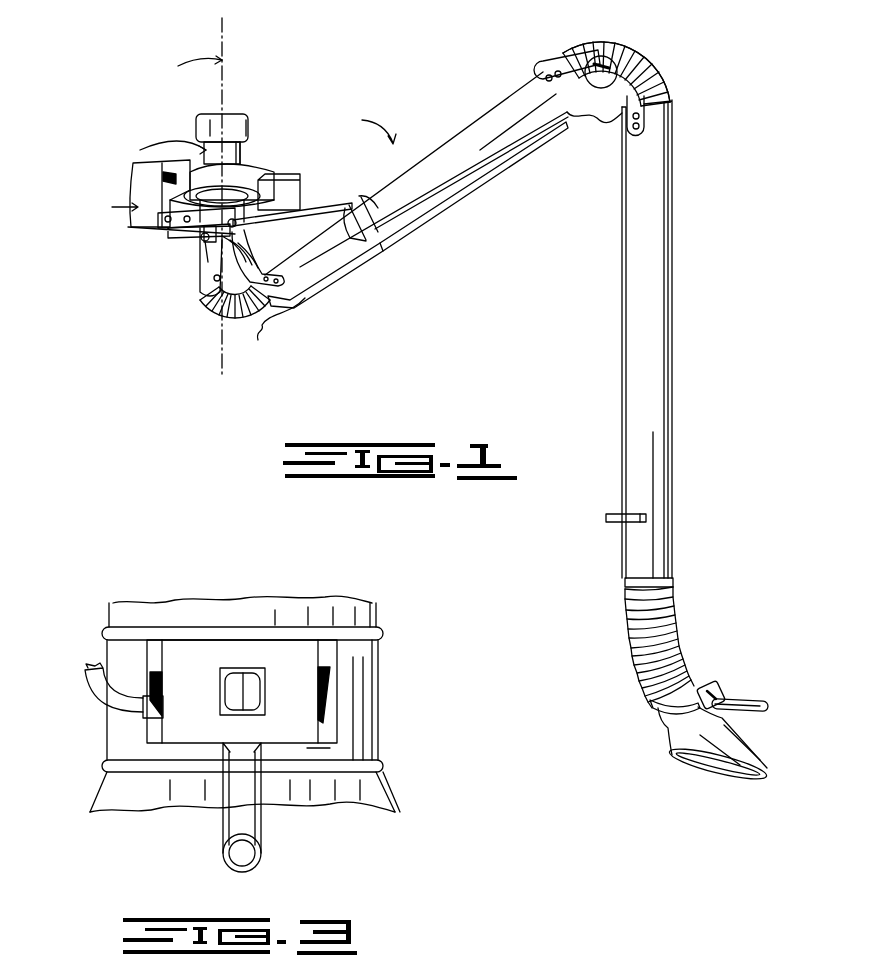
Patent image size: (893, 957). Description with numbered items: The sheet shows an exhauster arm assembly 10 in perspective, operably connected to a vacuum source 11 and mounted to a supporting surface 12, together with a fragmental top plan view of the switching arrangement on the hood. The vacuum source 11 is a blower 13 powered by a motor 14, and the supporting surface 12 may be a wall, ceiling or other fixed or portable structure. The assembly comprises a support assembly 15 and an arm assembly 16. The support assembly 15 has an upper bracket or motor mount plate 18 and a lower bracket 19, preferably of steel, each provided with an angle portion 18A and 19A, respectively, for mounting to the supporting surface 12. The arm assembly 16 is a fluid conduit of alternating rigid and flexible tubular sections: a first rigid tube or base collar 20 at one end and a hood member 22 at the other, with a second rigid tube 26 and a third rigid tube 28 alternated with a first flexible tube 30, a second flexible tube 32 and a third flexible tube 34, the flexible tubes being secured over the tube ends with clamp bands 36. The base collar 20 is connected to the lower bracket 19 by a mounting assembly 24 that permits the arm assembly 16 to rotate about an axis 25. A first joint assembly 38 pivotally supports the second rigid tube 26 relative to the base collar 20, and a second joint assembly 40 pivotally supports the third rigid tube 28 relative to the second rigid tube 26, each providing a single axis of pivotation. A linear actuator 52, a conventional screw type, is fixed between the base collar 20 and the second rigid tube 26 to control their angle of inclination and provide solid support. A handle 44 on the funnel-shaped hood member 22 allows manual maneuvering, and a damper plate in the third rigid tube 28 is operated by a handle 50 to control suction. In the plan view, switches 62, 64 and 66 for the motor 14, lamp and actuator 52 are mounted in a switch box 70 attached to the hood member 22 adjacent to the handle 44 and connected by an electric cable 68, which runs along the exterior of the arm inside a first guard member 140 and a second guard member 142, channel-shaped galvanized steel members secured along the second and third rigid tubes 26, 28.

In FIG. 1, the exhauster arm assembly 10 is at (362, 123).
In FIG. 1, the vacuum source 11 is at (195, 147).
In FIG. 1, the supporting surface 12 is at (295, 176).
In FIG. 1, the blower 13 is at (280, 175).
In FIG. 1, the motor 14 is at (240, 114).
In FIG. 1, the support assembly 15 is at (112, 207).
In FIG. 1, the arm assembly 16 is at (684, 230).
In FIG. 1, the upper bracket 18 is at (150, 162).
In FIG. 1, the angle portion 18A is at (160, 177).
In FIG. 1, the lower bracket 19 is at (168, 232).
In FIG. 1, the angle portion 19A is at (204, 236).
In FIG. 1, the base collar 20 is at (203, 240).
In FIG. 1, the hood member 22 is at (668, 748).
In FIG. 3, the hood member 22 is at (376, 604).
In FIG. 1, the mounting assembly 24 is at (160, 214).
In FIG. 1, the axis 25 is at (178, 67).
In FIG. 1, the second rigid tube 26 is at (460, 112).
In FIG. 1, the third rigid tube 28 is at (672, 378).
In FIG. 1, the first flexible tube 30 is at (238, 322).
In FIG. 1, the second flexible tube 32 is at (596, 45).
In FIG. 1, the third flexible tube 34 is at (680, 606).
In FIG. 1, the clamp bands 36 is at (568, 54).
In FIG. 1, the first joint assembly 38 is at (203, 301).
In FIG. 1, the second joint assembly 40 is at (632, 52).
In FIG. 1, the handle 44 is at (768, 709).
In FIG. 3, the handle 44 is at (222, 836).
In FIG. 1, the handle 50 is at (615, 514).
In FIG. 1, the linear actuator 52 is at (322, 206).
In FIG. 3, the switch 62 is at (340, 692).
In FIG. 3, the switch 64 is at (148, 676).
In FIG. 3, the switch 66 is at (250, 668).
In FIG. 1, the electric cable 68 is at (290, 318).
In FIG. 3, the electric cable 68 is at (88, 690).
In FIG. 1, the switch box 70 is at (714, 684).
In FIG. 3, the switch box 70 is at (307, 750).
In FIG. 1, the first guard member 140 is at (420, 238).
In FIG. 1, the second guard member 142 is at (620, 364).